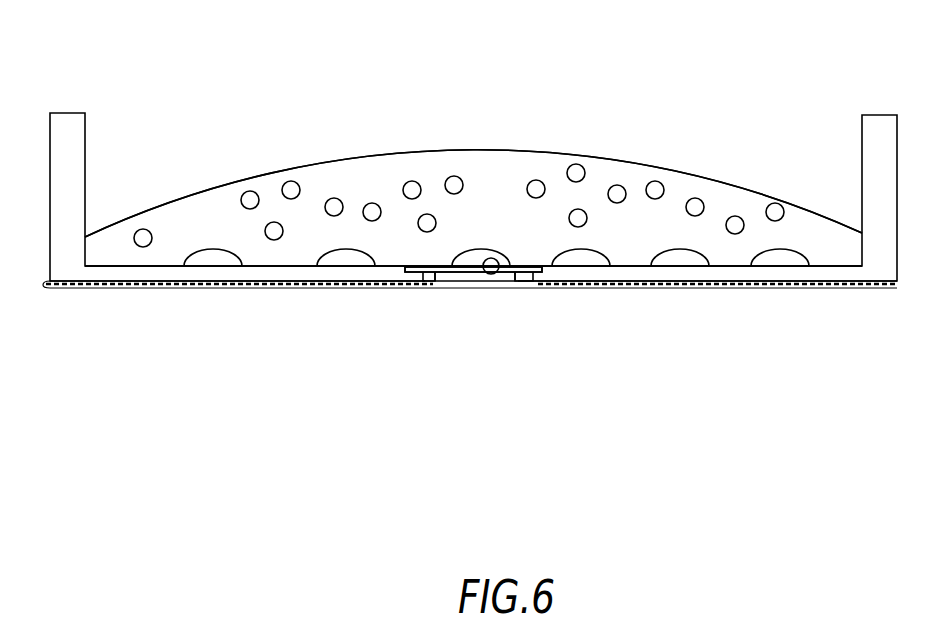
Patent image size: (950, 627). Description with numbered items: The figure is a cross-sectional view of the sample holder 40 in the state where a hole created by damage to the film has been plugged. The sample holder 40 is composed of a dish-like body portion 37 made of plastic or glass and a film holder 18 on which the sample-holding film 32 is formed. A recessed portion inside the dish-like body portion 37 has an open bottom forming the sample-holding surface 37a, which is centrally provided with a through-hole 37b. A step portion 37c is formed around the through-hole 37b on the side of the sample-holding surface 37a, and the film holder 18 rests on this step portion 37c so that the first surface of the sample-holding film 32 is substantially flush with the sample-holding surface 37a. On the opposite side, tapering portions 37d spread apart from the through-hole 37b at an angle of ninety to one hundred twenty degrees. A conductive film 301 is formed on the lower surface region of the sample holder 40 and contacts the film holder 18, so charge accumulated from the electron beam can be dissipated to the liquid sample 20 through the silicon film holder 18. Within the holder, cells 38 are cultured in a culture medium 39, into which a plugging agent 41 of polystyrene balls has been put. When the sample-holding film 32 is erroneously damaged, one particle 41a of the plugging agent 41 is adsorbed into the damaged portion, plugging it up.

The culture medium 39 is at (389, 183).
The liquid sample 20 is at (488, 203).
The particle of the plugging agent 41a is at (494, 258).
The plugging agent 41 is at (621, 185).
The cells 38 is at (212, 258).
The dish-like body portion 37 is at (277, 273).
The sample-holding surface 37a is at (297, 268).
The through-hole 37b is at (478, 286).
The step portion 37c is at (527, 284).
The tapering portions 37d is at (433, 280).
The conductive film 301 is at (332, 291).
The sample-holding film 32 is at (462, 269).
The film holder 18 is at (502, 273).
The sample holder 40 is at (662, 317).